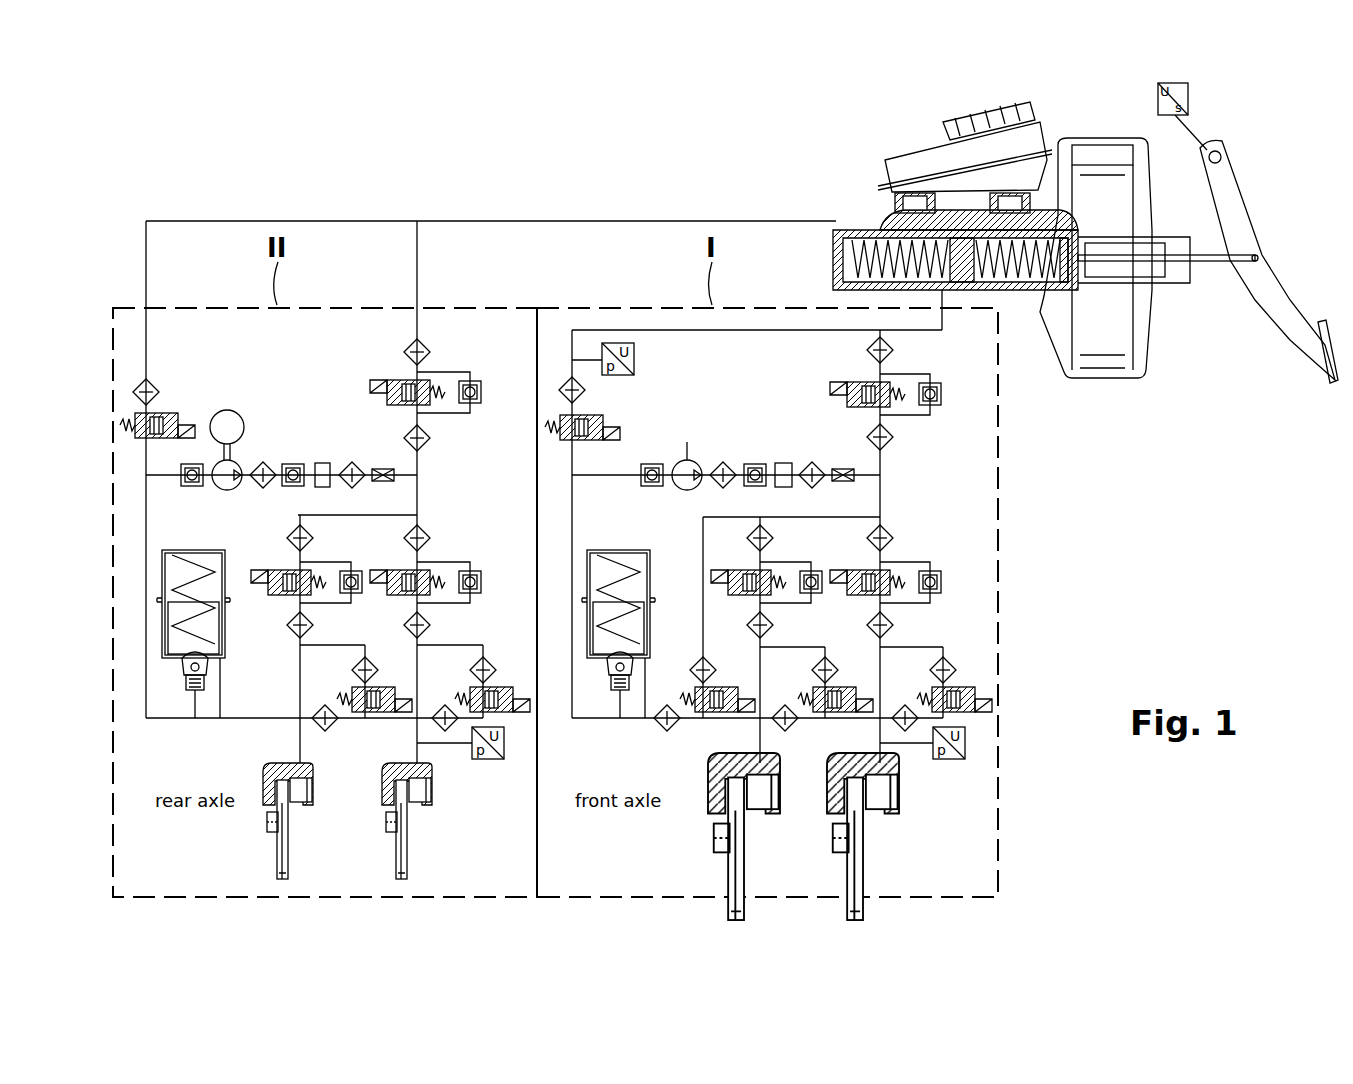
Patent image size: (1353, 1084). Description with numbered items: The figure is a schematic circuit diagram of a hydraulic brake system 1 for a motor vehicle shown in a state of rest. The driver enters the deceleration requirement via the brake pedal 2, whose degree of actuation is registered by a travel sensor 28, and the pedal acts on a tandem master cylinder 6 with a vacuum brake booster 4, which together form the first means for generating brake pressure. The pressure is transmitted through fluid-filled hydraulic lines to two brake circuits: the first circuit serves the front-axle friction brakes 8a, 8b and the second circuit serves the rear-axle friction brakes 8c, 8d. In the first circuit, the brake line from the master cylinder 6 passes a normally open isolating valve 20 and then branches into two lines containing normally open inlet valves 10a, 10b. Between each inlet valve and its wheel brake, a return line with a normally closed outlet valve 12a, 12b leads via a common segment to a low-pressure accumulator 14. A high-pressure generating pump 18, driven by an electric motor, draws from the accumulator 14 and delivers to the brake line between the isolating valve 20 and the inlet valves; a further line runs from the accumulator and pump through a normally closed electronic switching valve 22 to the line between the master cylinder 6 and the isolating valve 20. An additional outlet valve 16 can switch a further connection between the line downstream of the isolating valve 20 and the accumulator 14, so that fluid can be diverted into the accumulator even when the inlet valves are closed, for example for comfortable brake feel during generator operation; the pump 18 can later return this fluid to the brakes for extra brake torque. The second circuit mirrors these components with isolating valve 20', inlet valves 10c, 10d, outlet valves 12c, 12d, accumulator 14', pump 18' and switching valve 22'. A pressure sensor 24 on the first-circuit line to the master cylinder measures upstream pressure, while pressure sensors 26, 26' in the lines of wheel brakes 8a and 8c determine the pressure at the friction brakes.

The brake system 1 is at (345, 190).
The brake pedal 2 is at (1283, 292).
The vacuum brake booster 4 is at (1103, 365).
The tandem master cylinder 6 is at (880, 222).
The friction brake 8a is at (883, 790).
The friction brake 8b is at (765, 790).
The friction brake 8c is at (422, 797).
The friction brake 8d is at (305, 797).
The inlet valve 10a is at (860, 572).
The inlet valve 10b is at (738, 572).
The inlet valve 10c is at (400, 572).
The inlet valve 10d is at (280, 572).
The outlet valve 12a is at (948, 690).
The outlet valve 12b is at (830, 690).
The outlet valve 12c is at (488, 690).
The outlet valve 12d is at (368, 690).
The pressure accumulator 14 is at (642, 634).
The pressure accumulator 14' is at (219, 634).
The additional outlet valve 16 is at (712, 690).
The high-pressure generating pump 18 is at (722, 457).
The high-pressure generating pump 18' is at (262, 450).
The isolating valve 20 is at (854, 381).
The isolating valve 20' is at (394, 380).
The electronic switching valve 22 is at (620, 411).
The electronic switching valve 22' is at (201, 411).
The pressure sensor 24 is at (633, 352).
The pressure sensor 26 is at (953, 781).
The pressure sensor 26' is at (490, 781).
The travel sensor 28 is at (1158, 100).